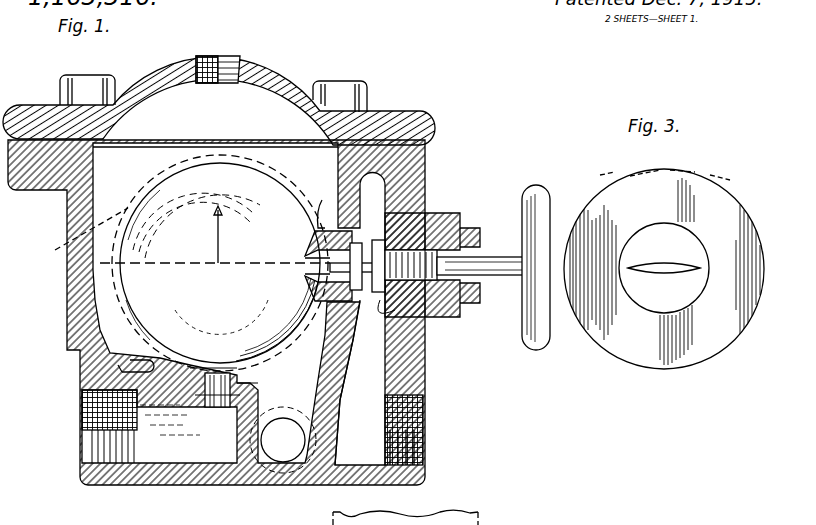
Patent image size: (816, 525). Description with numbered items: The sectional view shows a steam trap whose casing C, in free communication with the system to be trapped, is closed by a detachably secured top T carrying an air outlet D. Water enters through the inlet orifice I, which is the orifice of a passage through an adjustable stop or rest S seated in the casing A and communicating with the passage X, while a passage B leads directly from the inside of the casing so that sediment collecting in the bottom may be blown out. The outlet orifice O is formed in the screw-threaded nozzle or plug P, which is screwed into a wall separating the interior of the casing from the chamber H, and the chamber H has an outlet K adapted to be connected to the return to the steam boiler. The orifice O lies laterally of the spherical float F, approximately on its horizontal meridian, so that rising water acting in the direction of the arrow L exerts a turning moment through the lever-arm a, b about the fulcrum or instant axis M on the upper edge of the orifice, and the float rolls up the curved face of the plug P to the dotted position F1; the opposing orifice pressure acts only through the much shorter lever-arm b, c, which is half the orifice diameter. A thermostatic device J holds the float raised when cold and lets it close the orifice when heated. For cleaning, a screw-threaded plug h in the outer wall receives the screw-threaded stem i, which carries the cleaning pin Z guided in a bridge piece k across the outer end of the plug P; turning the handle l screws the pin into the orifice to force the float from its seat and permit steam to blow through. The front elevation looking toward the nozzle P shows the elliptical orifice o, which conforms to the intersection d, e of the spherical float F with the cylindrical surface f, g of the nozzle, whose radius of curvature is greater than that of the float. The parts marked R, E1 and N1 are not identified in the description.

In FIG. 1, the casing C is at (420, 118).
In FIG. 3, the casing C is at (637, 358).
In FIG. 1, the top T is at (258, 78).
In FIG. 1, the air outlet D is at (218, 57).
In FIG. 1, the arrow L is at (210, 229).
In FIG. 1, the ring R is at (220, 263).
In FIG. 1, the outlet orifice O is at (283, 407).
In FIG. 1, the fulcrum or instant axis M is at (201, 263).
In FIG. 1, the float center point of lever-arm a is at (218, 262).
In FIG. 1, the raised float position F1 is at (81, 237).
In FIG. 1, the float F is at (122, 282).
In FIG. 1, the fulcrum point of lever-arms b is at (306, 259).
In FIG. 1, the orifice center point c is at (318, 268).
In FIG. 1, the cylindrical surface g is at (321, 202).
In FIG. 3, the cylindrical surface g is at (730, 178).
In FIG. 1, the bridge piece k is at (356, 262).
In FIG. 1, the nozzle or plug P is at (398, 242).
In FIG. 3, the nozzle or plug P is at (680, 298).
In FIG. 1, the screw-threaded plug h is at (430, 235).
In FIG. 1, the screw-threaded stem i is at (488, 262).
In FIG. 1, the handle l is at (524, 195).
In FIG. 1, the cleaning pin Z is at (395, 312).
In FIG. 1, the chamber H is at (395, 358).
In FIG. 1, the outlet K is at (420, 432).
In FIG. 1, the thermostatic device J is at (100, 350).
In FIG. 1, the passage X is at (85, 418).
In FIG. 1, the tube E1 is at (217, 407).
In FIG. 1, the stop or rest S is at (185, 395).
In FIG. 1, the inlet orifice I is at (205, 400).
In FIG. 1, the casing A is at (262, 392).
In FIG. 1, the passage B is at (283, 440).
In FIG. 1, the fragment N1 is at (419, 516).
In FIG. 3, the elliptical orifice o is at (655, 273).
In FIG. 3, the cylindrical surface f is at (600, 175).
In FIG. 3, the intersection point d is at (630, 177).
In FIG. 3, the intersection point e is at (698, 172).